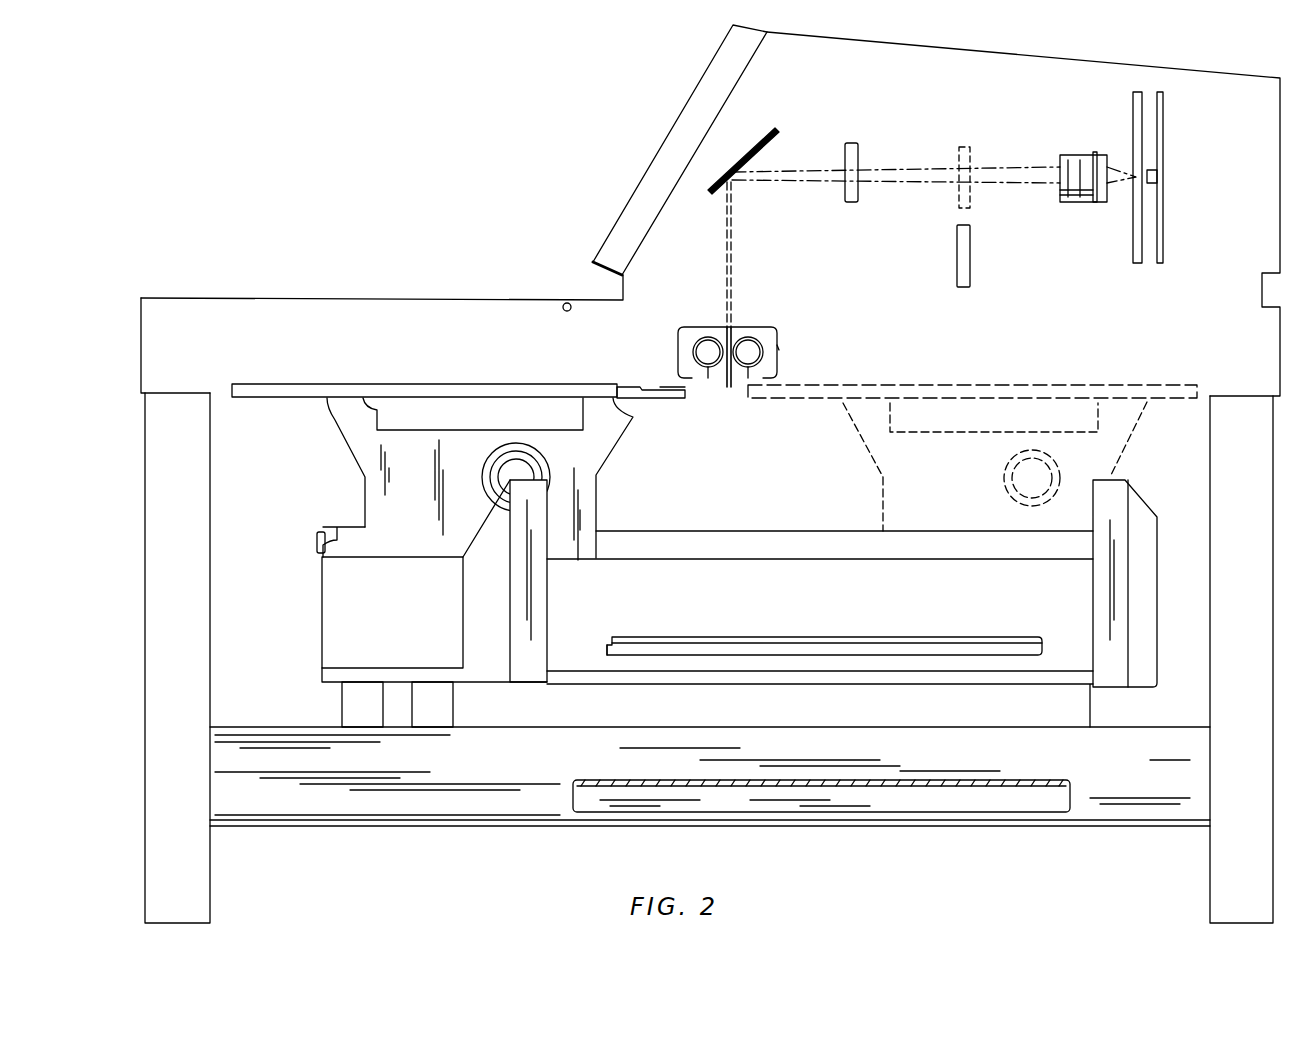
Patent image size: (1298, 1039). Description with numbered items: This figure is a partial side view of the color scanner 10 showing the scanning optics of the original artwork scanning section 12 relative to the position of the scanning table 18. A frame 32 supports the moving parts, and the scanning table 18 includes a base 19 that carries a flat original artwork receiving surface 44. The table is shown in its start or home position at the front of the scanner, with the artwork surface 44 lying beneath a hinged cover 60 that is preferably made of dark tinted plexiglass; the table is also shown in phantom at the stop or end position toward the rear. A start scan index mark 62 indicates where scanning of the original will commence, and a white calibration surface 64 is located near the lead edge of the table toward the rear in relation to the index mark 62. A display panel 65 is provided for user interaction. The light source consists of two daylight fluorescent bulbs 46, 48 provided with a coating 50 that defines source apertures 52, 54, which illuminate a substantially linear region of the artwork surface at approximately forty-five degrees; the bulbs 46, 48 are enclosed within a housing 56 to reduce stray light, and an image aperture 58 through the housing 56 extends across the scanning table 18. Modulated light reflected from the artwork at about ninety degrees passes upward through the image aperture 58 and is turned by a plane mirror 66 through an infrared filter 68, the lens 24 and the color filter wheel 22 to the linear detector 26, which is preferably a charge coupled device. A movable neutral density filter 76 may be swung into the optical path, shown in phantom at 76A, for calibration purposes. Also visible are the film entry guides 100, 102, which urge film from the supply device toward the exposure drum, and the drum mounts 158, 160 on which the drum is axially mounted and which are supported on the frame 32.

The color scanner 10 is at (452, 162).
The original artwork scanning section 12 is at (1100, 303).
The scanning table 18 is at (308, 443).
The scanning table base 19 is at (365, 462).
The color filter wheel 22 is at (1133, 238).
The lens 24 is at (1078, 155).
The linear detector 26 is at (1160, 176).
The frame 32 is at (475, 813).
The original artwork receiving surface 44 is at (527, 383).
The fluorescent bulb 46 is at (760, 367).
The fluorescent bulb 48 is at (690, 358).
The coating 50 is at (700, 347).
The source aperture 52 is at (733, 390).
The source aperture 54 is at (717, 367).
The housing 56 is at (778, 347).
The image aperture 58 is at (731, 327).
The hinged cover 60 is at (347, 300).
The start scan index mark 62 is at (617, 387).
The white calibration surface 64 is at (667, 386).
The display panel 65 is at (676, 128).
The plane mirror 66 is at (755, 142).
The infrared filter 68 is at (851, 203).
The neutral density filter 76 is at (965, 258).
The neutral density filter in optical path 76A is at (975, 148).
The film entry guide 100 is at (607, 640).
The film entry guide 102 is at (607, 652).
The drum mount 158 is at (485, 543).
The drum mount 160 is at (1137, 503).